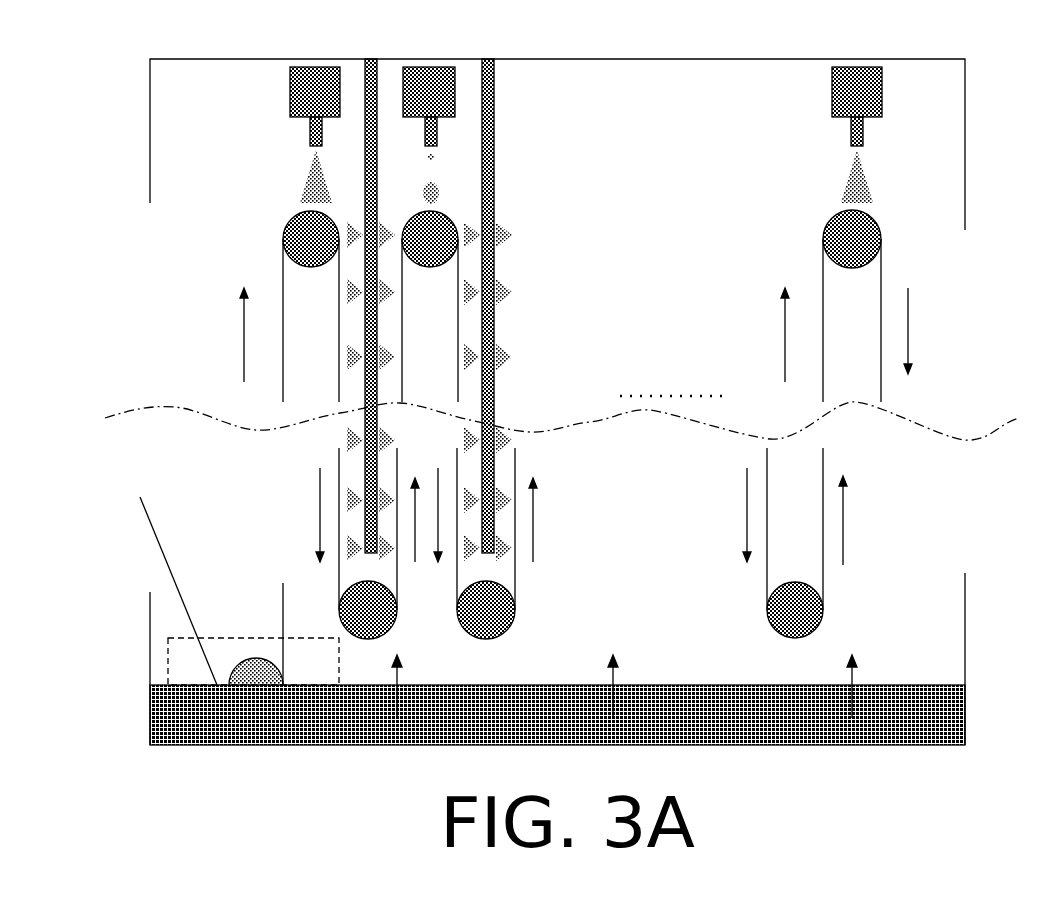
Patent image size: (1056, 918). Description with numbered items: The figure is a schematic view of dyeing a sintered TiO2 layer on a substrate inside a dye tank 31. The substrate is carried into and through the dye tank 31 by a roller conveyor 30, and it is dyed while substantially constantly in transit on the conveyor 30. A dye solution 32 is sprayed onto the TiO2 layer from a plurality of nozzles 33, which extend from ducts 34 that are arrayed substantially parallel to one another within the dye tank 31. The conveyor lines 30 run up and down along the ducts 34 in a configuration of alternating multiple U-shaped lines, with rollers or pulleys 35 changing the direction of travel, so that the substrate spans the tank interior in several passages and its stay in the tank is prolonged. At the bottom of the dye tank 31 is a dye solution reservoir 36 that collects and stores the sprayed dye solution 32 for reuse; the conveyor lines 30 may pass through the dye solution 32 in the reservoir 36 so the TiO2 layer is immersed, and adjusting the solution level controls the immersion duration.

The roller conveyor 30 is at (280, 290).
The dye tank 31 is at (650, 59).
The dye solution 32 is at (308, 175).
The nozzles 33 is at (316, 90).
The ducts 34 is at (494, 126).
The rollers or pulleys 35 is at (240, 690).
The dye solution reservoir 36 is at (908, 684).